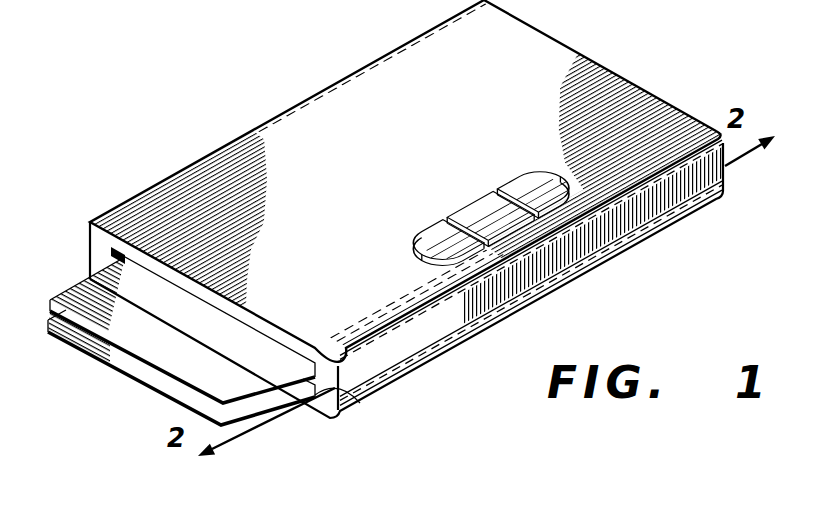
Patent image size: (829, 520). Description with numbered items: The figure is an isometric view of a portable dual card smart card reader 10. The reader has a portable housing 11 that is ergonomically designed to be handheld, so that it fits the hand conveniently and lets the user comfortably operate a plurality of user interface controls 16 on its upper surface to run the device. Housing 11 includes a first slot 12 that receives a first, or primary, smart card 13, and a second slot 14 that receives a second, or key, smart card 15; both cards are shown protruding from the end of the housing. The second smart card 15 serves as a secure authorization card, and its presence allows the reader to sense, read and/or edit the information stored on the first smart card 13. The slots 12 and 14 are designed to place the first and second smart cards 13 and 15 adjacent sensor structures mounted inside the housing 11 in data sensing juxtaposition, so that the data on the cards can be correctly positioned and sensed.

The portable dual card smart card reader 10 is at (676, 337).
The portable housing 11 is at (320, 94).
The first slot 12 is at (323, 354).
The first smart card 13 is at (57, 297).
The second slot 14 is at (360, 404).
The second smart card 15 is at (126, 376).
The user interface controls 16 is at (536, 176).